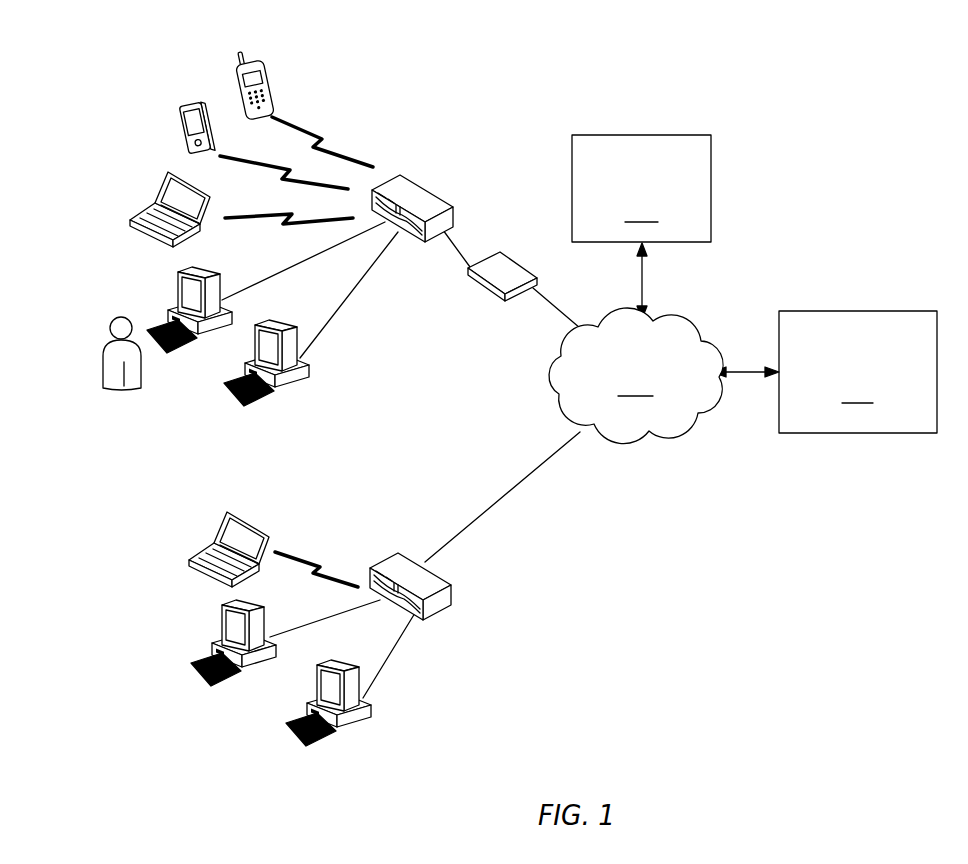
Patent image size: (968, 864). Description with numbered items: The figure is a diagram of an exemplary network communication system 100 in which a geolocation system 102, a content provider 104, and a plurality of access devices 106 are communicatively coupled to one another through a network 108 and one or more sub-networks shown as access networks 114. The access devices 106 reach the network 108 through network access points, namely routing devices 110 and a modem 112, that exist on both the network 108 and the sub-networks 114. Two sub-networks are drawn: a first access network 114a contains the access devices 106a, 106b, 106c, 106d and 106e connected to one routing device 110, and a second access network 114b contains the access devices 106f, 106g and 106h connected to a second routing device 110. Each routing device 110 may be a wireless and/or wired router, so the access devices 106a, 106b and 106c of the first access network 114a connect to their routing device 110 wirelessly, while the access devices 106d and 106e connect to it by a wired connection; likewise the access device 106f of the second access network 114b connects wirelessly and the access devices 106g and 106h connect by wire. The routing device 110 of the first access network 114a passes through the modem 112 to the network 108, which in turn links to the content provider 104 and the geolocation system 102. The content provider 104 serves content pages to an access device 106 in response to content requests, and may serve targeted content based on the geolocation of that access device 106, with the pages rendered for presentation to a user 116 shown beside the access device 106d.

The network communication system 100 is at (824, 81).
The geolocation system 102 is at (858, 372).
The content provider 104 is at (641, 188).
The access devices 106 is at (59, 31).
The access device 106a is at (210, 69).
The access device 106b is at (148, 121).
The access device 106c is at (135, 197).
The access device 106d is at (148, 300).
The access device 106e is at (303, 369).
The access device 106f is at (194, 543).
The access device 106g is at (195, 642).
The access device 106h is at (364, 719).
The network 108 is at (636, 376).
The routing device 110 is at (445, 403).
The modem 112 is at (475, 280).
The access networks 114 is at (403, 63).
The first access network 114a is at (460, 125).
The second access network 114b is at (488, 673).
The user 116 is at (89, 366).